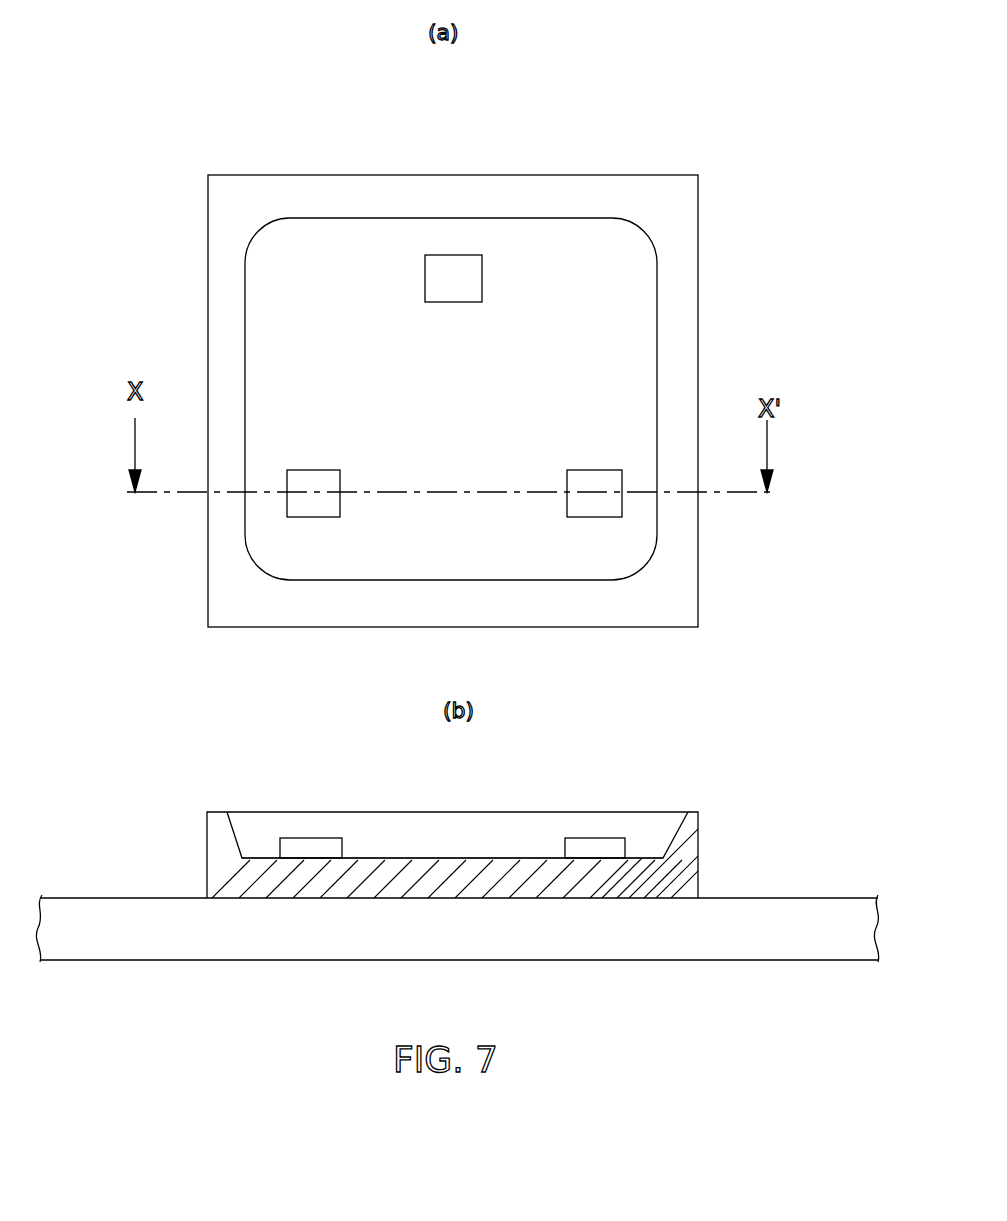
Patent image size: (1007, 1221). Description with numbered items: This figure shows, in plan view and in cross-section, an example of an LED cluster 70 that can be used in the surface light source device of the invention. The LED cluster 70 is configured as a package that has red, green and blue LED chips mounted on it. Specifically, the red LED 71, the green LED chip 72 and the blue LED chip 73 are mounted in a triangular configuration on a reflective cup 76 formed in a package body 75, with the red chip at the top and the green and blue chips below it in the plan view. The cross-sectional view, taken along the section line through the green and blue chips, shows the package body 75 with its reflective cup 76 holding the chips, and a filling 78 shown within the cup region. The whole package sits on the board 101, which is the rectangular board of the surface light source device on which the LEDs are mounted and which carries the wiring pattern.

The LED cluster 70 is at (462, 84).
The red LED 71 is at (455, 262).
The green LED chip 72 is at (290, 507).
The blue LED chip 73 is at (603, 507).
The package body 75 is at (680, 281).
The reflective cup 76 is at (574, 268).
The encapsulant 78 is at (485, 826).
The board 101 is at (853, 915).